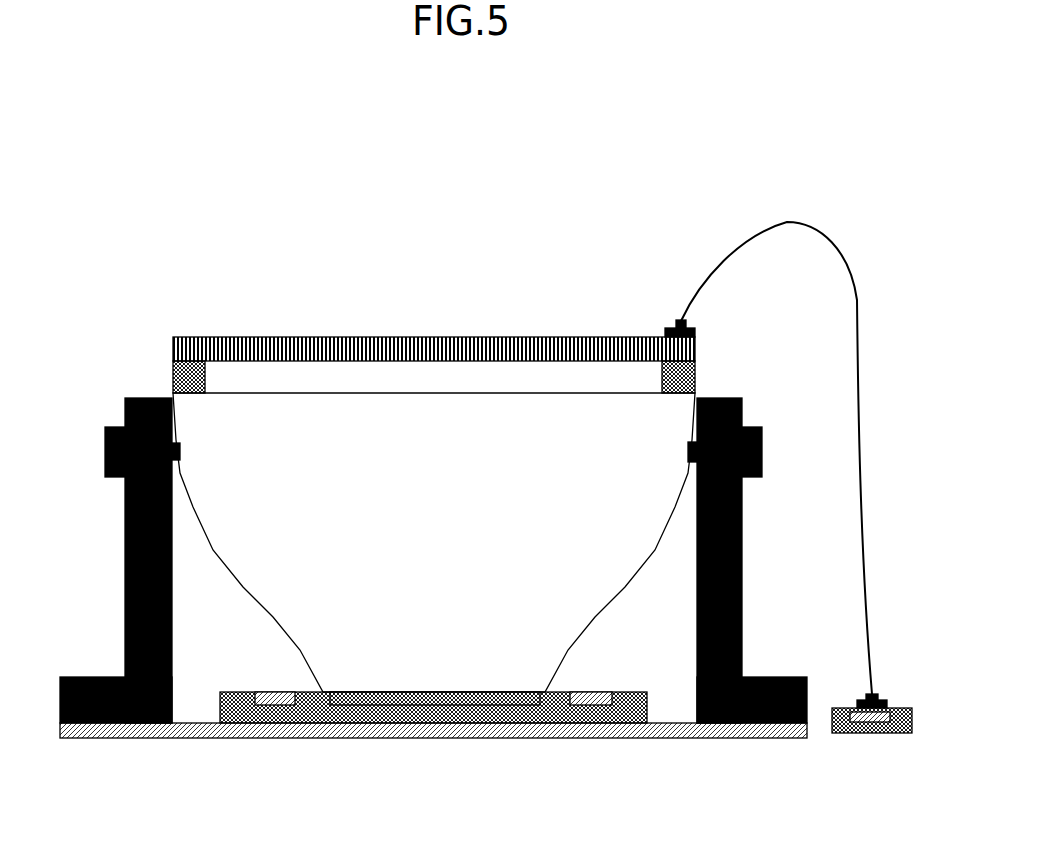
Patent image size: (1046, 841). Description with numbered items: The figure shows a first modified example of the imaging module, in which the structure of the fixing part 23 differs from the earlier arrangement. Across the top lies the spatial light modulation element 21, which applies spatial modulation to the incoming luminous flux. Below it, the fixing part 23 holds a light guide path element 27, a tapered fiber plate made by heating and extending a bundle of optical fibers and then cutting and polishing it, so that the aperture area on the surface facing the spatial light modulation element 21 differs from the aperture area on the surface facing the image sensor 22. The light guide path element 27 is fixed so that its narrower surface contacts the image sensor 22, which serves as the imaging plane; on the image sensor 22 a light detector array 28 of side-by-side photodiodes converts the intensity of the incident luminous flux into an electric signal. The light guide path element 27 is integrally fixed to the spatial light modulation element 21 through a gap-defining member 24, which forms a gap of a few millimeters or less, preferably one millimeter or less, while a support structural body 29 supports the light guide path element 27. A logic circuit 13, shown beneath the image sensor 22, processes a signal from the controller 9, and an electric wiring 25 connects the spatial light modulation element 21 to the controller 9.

The controller 9 is at (899, 685).
The logic circuit 13 is at (280, 723).
The spatial light modulation element 21 is at (377, 337).
The image sensor 22 is at (540, 723).
The fixing part 23 is at (737, 368).
The gap-defining member 24 is at (172, 385).
The wiring 25 is at (858, 318).
The light guide path element 27 is at (606, 597).
The light detector array 28 is at (383, 723).
The support structural body 29 is at (742, 573).